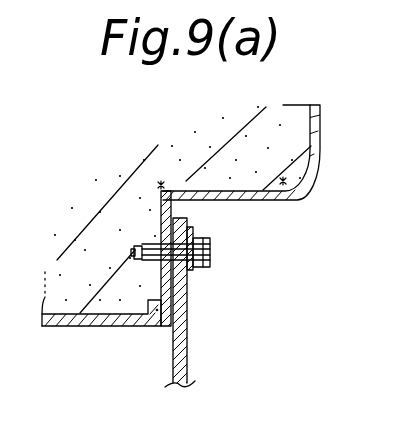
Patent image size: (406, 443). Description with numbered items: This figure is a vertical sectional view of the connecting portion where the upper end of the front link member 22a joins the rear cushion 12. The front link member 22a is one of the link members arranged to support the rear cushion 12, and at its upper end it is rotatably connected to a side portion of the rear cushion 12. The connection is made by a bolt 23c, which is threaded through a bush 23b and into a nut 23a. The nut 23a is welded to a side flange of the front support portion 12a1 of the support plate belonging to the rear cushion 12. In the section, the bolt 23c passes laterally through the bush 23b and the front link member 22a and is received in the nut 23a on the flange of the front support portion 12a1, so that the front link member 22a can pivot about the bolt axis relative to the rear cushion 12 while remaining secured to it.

The rear cushion 12 is at (325, 112).
The front support portion 12a1 is at (82, 327).
The front link member 22a is at (187, 328).
The nut 23a is at (158, 234).
The bush 23b is at (192, 277).
The bolt 23c is at (206, 239).